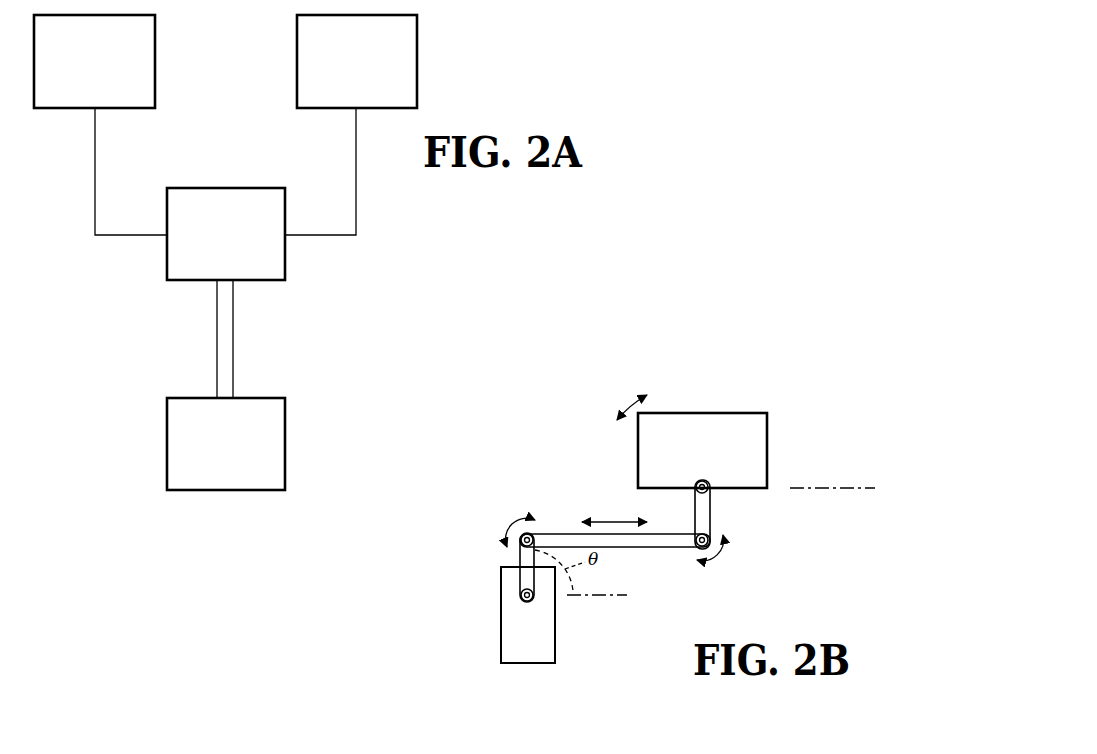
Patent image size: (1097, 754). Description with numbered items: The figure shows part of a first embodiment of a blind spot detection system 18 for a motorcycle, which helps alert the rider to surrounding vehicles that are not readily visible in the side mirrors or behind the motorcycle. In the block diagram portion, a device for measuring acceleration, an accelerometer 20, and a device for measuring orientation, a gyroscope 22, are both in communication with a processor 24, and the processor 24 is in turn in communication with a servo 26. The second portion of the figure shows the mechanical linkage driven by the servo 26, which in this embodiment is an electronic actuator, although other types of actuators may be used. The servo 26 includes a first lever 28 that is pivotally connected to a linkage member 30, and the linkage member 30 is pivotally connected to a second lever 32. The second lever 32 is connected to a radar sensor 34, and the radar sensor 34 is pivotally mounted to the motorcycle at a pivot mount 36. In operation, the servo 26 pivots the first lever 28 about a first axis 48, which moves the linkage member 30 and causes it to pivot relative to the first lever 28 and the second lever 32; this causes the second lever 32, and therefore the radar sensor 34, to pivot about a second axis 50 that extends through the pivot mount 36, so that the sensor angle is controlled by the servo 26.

In FIG. 2A, the blind spot detection system 18 is at (130, 498).
In FIG. 2B, the blind spot detection system 18 is at (727, 345).
In FIG. 2A, the accelerometer 20 is at (155, 62).
In FIG. 2A, the gyroscope 22 is at (417, 62).
In FIG. 2A, the processor 24 is at (220, 188).
In FIG. 2A, the servo 26 is at (167, 448).
In FIG. 2B, the servo 26 is at (512, 627).
In FIG. 2B, the first lever 28 is at (518, 560).
In FIG. 2B, the linkage member 30 is at (640, 547).
In FIG. 2B, the second lever 32 is at (704, 512).
In FIG. 2B, the radar sensor 34 is at (712, 413).
In FIG. 2B, the pivot mount 36 is at (706, 493).
In FIG. 2B, the first axis 48 is at (520, 592).
In FIG. 2B, the second axis 50 is at (697, 488).